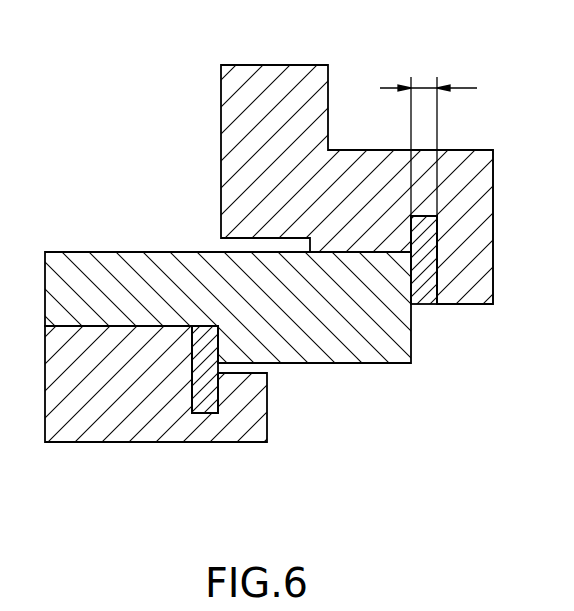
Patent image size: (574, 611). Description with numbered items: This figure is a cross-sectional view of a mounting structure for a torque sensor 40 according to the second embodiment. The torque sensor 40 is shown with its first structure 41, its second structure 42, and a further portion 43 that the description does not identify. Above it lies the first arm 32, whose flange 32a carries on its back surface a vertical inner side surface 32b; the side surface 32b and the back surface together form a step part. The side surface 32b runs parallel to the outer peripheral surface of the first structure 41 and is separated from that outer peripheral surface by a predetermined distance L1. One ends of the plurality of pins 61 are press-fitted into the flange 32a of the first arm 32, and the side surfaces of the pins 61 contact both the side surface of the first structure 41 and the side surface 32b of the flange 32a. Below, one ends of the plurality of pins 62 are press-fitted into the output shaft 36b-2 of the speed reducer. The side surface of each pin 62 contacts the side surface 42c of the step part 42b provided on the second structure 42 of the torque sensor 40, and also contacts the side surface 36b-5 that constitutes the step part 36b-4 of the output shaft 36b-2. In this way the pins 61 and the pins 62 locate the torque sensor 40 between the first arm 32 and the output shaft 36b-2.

The first arm 32 is at (295, 77).
The flange 32a is at (468, 163).
The side surface 32b is at (431, 266).
The predetermined distance L1 is at (423, 88).
The pins 61 is at (423, 293).
The torque sensor 40 is at (442, 431).
The first structure 41 is at (383, 353).
The second structure 42 is at (262, 350).
The third layer 43 is at (318, 347).
The step part 42b is at (197, 305).
The side surface 42c is at (218, 352).
The output shaft 36b-2 is at (81, 440).
The step part 36b-4 is at (182, 400).
The side surface 36b-5 is at (191, 370).
The pins 62 is at (212, 413).